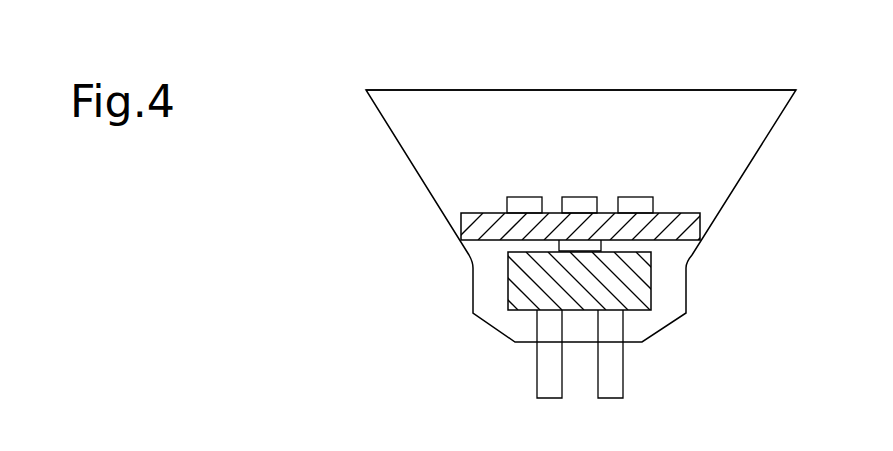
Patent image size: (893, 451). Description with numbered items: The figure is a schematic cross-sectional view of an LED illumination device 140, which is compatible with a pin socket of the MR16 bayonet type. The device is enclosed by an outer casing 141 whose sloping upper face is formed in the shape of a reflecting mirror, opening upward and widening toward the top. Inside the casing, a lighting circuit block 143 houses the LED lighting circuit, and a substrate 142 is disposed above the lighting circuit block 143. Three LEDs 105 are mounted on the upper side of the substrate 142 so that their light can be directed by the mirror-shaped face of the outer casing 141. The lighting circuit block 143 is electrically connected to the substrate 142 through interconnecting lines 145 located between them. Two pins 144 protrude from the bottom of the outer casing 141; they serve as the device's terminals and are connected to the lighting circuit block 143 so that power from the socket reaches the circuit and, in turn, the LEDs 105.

The LED illumination device 140 is at (362, 90).
The outer casing 141 is at (775, 90).
The substrate 142 is at (700, 217).
The LEDs 105 is at (632, 197).
The interconnecting lines 145 is at (559, 242).
The lighting circuit block 143 is at (651, 287).
The pins 144 is at (623, 372).